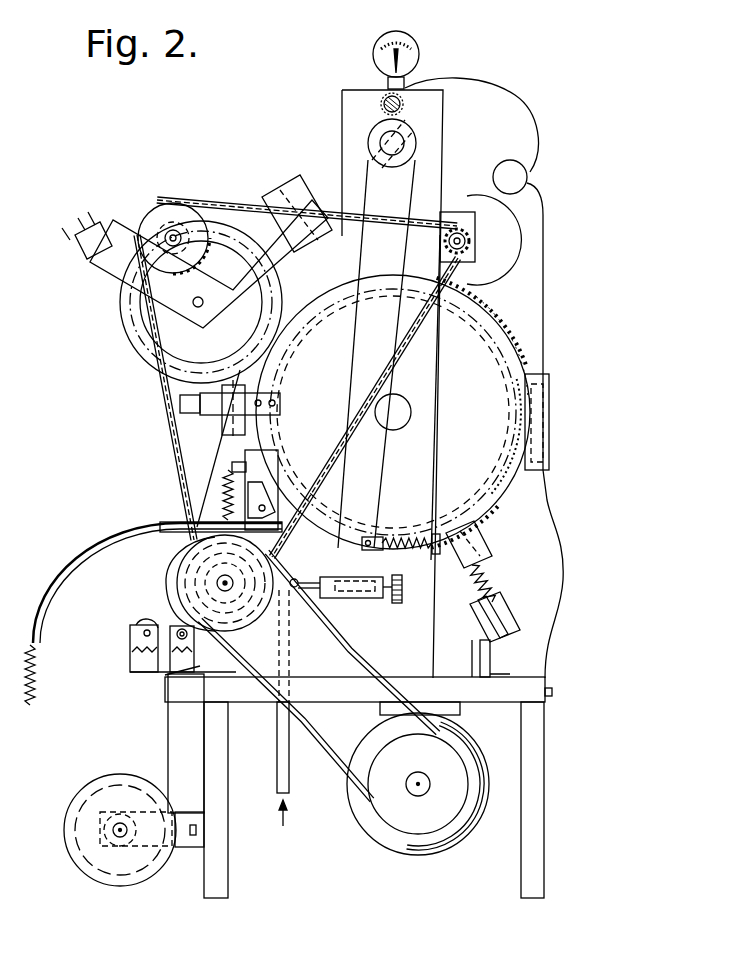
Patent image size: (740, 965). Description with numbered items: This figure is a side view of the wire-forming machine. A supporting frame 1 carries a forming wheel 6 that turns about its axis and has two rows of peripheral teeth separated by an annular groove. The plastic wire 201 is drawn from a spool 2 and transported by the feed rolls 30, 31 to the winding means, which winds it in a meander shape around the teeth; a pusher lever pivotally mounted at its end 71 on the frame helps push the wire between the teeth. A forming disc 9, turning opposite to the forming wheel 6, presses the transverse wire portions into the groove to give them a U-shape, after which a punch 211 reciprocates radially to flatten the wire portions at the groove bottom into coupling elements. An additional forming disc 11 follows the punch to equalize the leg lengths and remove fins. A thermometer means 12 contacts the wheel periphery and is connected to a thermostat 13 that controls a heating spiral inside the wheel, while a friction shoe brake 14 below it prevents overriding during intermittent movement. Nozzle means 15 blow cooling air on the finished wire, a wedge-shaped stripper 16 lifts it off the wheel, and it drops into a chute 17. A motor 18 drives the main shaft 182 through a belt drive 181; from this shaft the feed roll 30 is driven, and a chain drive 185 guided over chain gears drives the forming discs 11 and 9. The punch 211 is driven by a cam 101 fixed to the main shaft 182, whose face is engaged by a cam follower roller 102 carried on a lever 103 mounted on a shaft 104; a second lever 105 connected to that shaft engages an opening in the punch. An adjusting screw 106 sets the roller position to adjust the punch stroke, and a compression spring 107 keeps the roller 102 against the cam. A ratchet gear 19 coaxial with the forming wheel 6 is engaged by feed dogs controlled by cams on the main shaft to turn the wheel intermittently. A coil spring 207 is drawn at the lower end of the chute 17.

The supporting frame 1 is at (525, 695).
The spool 2 is at (108, 778).
The forming wheel 6 is at (490, 322).
The forming disc 9 is at (122, 330).
The additional forming disc 11 is at (490, 243).
The thermometer means 12 is at (550, 422).
The thermostat 13 is at (413, 47).
The friction shoe brake 14 is at (472, 548).
The nozzle means 15 is at (297, 581).
The wedge-shaped stripper 16 is at (245, 505).
The chute 17 is at (84, 562).
The motor 18 is at (417, 852).
The ratchet gear 19 is at (524, 362).
The feed roll 30 is at (203, 662).
The feed roll 31 is at (144, 626).
The end of lever 71 is at (190, 416).
The cam 101 is at (205, 575).
The cam follower roller 102 is at (300, 592).
The lever 103 is at (372, 457).
The shaft 104 is at (406, 150).
The lever 105 is at (330, 172).
The adjusting screw 106 is at (396, 604).
The compression spring 107 is at (418, 538).
The belt drive 181 is at (293, 745).
The main shaft 182 is at (217, 584).
The chain drive 185 is at (163, 438).
The wire 201 is at (168, 729).
The coil spring 207 is at (36, 684).
The punch means 211 is at (240, 200).